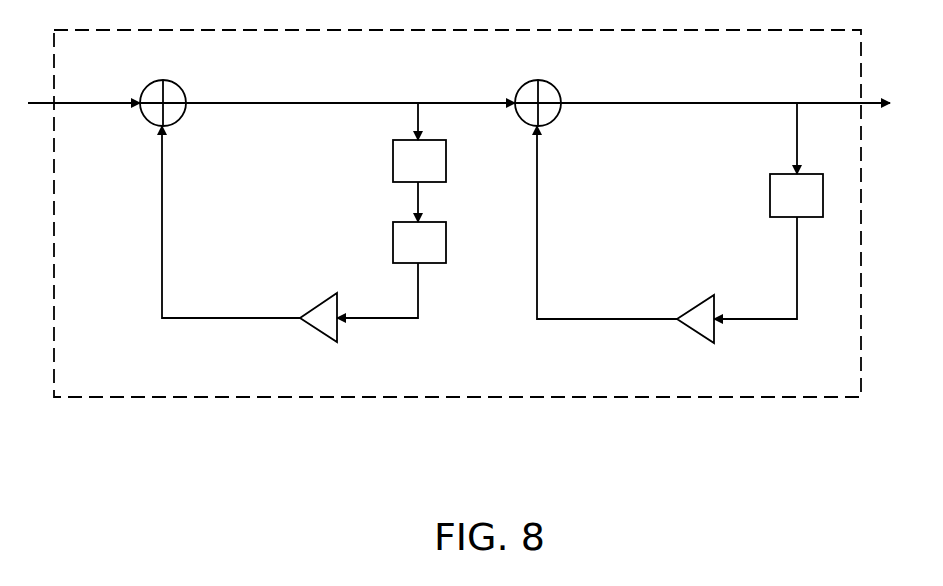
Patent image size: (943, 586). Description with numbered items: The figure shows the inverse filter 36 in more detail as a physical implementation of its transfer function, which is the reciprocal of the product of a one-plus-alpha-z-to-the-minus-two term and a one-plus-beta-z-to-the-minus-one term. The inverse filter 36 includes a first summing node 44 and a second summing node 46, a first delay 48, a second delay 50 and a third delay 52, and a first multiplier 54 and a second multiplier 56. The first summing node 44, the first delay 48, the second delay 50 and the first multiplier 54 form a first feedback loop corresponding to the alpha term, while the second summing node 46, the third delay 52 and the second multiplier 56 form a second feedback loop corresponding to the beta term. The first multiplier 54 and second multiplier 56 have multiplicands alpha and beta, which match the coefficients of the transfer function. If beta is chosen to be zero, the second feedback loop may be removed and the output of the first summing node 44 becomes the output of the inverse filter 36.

The inverse filter 36 is at (100, 380).
The first summing node 44 is at (174, 84).
The second summing node 46 is at (557, 84).
The first delay 48 is at (393, 170).
The second delay 50 is at (393, 245).
The third delay 52 is at (770, 198).
The first multiplier 54 is at (311, 324).
The second multiplier 56 is at (698, 328).